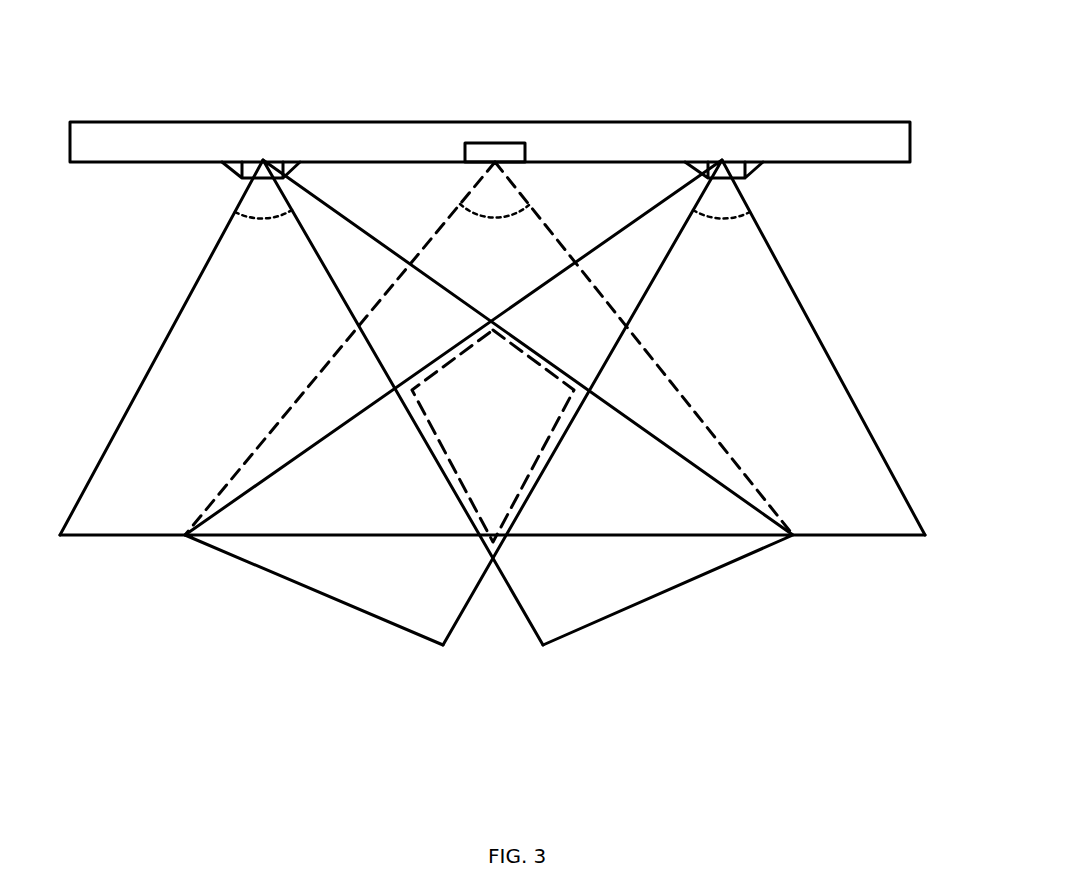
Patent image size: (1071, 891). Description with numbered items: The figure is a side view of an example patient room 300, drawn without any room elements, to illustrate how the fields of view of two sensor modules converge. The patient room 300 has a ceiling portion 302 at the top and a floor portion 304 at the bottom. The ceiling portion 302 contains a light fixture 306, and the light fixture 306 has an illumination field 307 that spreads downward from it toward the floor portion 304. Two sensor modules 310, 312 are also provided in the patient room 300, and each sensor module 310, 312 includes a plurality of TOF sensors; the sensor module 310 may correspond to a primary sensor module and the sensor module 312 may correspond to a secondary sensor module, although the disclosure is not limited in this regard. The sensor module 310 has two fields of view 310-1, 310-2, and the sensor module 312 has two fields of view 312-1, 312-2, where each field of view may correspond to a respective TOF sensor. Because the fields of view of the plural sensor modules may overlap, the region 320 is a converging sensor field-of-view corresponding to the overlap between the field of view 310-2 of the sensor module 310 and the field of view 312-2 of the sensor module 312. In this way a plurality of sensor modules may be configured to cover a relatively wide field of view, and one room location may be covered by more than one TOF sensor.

The patient room 300 is at (113, 30).
The ceiling portion 302 is at (929, 158).
The floor portion 304 is at (903, 548).
The light fixture 306 is at (497, 143).
The illumination field 307 is at (508, 222).
The sensor module 310 is at (227, 184).
The field of view 310-1 is at (252, 233).
The field of view 310-2 is at (330, 234).
The sensor module 312 is at (764, 184).
The field of view 312-1 is at (744, 257).
The field of view 312-2 is at (675, 213).
The converging sensor field-of-view region 320 is at (493, 436).